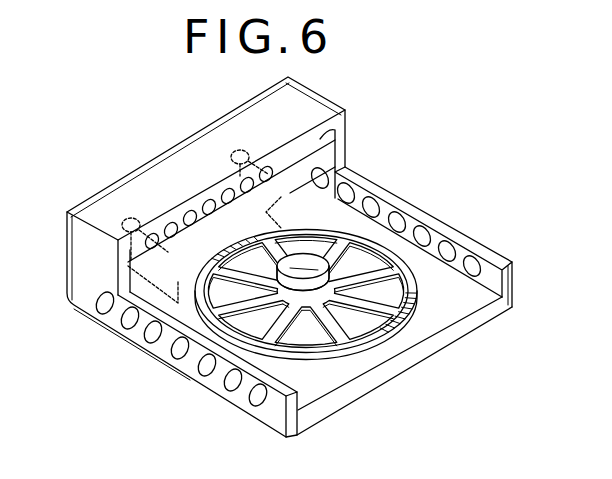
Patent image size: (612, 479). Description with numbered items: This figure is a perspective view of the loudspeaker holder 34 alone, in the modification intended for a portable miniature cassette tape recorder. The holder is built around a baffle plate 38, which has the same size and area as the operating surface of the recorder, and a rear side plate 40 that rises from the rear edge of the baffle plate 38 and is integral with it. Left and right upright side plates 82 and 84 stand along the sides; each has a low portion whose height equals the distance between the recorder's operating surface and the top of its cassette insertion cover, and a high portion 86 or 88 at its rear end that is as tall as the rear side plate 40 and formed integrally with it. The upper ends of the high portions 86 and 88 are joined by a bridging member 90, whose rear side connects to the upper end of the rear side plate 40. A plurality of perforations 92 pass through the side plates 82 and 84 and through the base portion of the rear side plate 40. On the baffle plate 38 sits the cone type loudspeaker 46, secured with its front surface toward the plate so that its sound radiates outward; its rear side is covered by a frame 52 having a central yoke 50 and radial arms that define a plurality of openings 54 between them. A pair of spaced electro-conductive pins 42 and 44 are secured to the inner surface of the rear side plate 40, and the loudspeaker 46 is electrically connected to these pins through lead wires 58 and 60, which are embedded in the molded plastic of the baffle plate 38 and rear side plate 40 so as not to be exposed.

The loudspeaker holder 34 is at (414, 186).
The baffle plate 38 is at (313, 400).
The rear side plate 40 is at (200, 203).
The pin 42 is at (177, 198).
The pin 44 is at (307, 130).
The cone type loudspeaker 46 is at (420, 318).
The yoke 50 is at (305, 260).
The frame 52 is at (377, 330).
The openings 54 is at (327, 340).
The lead wire 58 is at (156, 281).
The lead wire 60 is at (287, 203).
The left upright side plate 82 is at (192, 367).
The right upright side plate 84 is at (462, 253).
The high portion 86 is at (77, 255).
The high portion 88 is at (333, 150).
The bridging member 90 is at (107, 198).
The perforations 92 is at (257, 399).